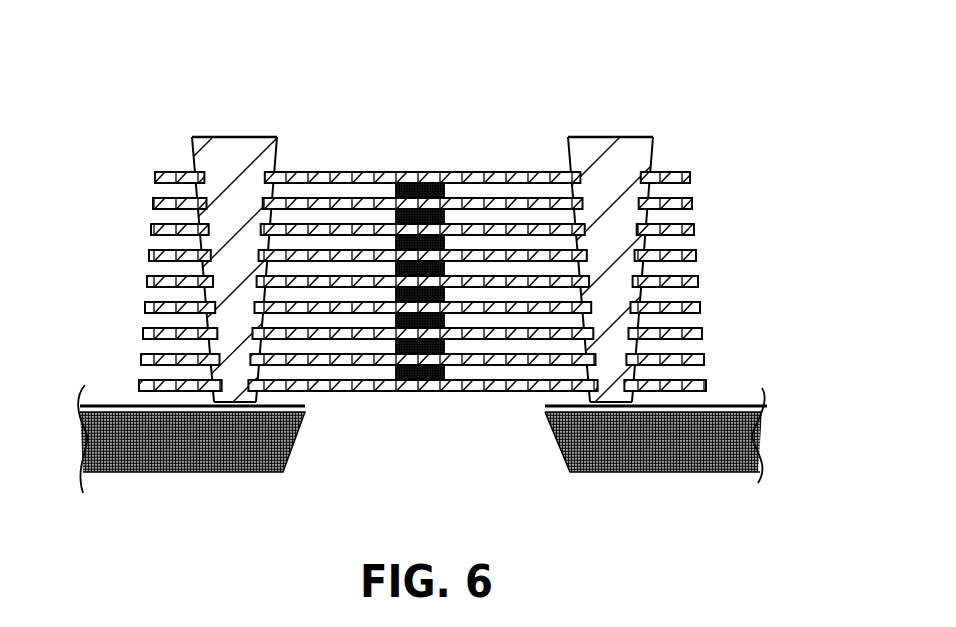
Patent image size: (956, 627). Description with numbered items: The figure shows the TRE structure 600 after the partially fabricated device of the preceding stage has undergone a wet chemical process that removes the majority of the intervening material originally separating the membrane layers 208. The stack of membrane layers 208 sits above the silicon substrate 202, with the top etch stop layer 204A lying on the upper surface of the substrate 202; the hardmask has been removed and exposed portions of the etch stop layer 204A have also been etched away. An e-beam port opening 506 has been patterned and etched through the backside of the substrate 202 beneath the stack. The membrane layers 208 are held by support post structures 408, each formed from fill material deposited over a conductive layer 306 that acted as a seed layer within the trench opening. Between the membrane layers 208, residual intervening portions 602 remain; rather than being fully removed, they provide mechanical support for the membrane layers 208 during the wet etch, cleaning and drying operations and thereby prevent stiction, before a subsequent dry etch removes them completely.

The TRE structure 600 is at (147, 88).
The support post structure 408 is at (238, 130).
The residual intervening portions 602 is at (422, 185).
The conductive layer 306 is at (653, 152).
The membrane layers 208 is at (145, 330).
The silicon substrate 202 is at (204, 455).
The top etch stop layer 204A is at (767, 410).
The e-beam port opening 506 is at (412, 468).